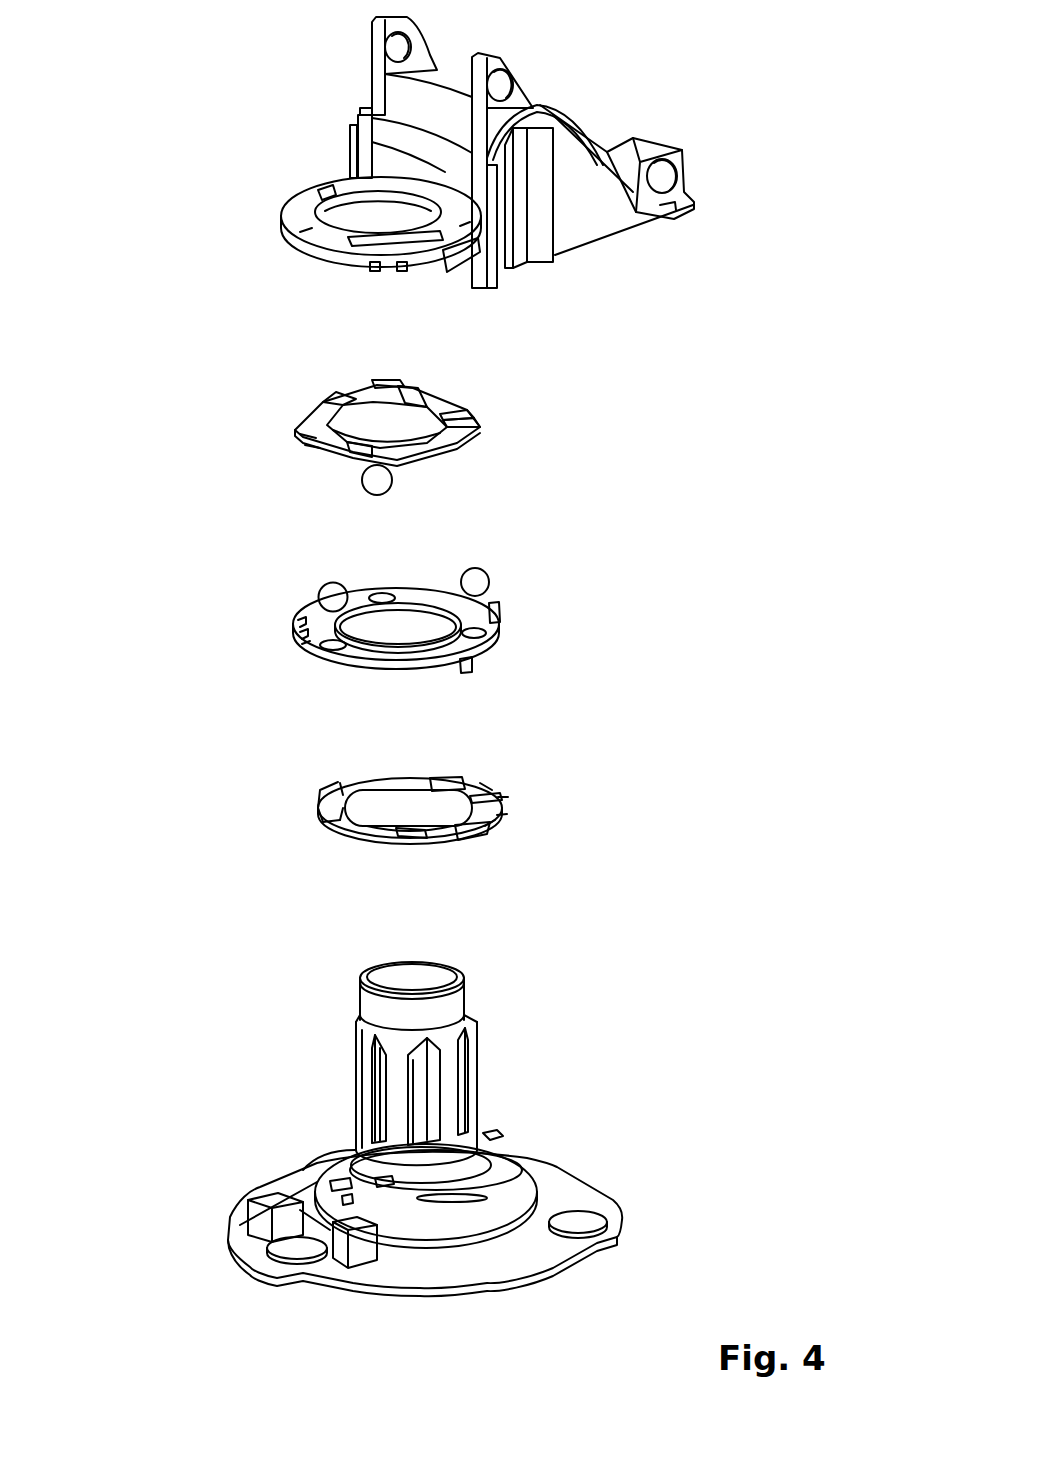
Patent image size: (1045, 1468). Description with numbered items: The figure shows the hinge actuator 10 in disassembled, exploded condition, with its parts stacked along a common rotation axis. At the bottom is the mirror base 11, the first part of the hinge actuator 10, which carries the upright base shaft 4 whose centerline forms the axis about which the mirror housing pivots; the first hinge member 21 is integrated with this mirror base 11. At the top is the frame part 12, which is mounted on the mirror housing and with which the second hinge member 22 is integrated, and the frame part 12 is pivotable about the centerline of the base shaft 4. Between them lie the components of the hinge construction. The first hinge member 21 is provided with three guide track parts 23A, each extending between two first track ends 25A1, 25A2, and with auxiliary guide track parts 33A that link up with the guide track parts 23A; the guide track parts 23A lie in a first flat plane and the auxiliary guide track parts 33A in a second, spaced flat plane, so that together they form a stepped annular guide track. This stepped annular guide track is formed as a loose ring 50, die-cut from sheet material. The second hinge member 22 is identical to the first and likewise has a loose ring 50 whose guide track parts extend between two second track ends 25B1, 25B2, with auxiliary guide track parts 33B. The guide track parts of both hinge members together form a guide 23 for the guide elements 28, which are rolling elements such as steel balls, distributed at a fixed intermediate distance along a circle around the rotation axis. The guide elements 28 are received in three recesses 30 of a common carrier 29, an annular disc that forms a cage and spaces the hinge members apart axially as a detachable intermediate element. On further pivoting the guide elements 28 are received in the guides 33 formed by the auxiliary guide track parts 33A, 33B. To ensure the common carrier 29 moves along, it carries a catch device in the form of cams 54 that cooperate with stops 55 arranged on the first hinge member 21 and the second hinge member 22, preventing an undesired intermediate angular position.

The base shaft 4 is at (455, 1003).
The hinge actuator 10 is at (163, 1212).
The mirror base 11 is at (483, 1253).
The frame part 12 is at (593, 227).
The first hinge member 21 is at (330, 1190).
The second hinge member 22 is at (313, 400).
The guide 23 is at (480, 423).
The guide track parts 23A is at (377, 780).
The first track end 25A1 is at (500, 807).
The first track end 25A2 is at (473, 835).
The second track end 25B1 is at (470, 448).
The second track end 25B2 is at (478, 432).
The guide elements 28 is at (488, 575).
The common carrier 29 is at (307, 605).
The recesses 30 is at (310, 658).
The guides 33 is at (373, 390).
The auxiliary guide track parts 33A is at (333, 800).
The auxiliary guide track parts 33B is at (313, 443).
The loose ring 50 is at (280, 425).
The cams 54 is at (497, 608).
The stops 55 is at (407, 267).